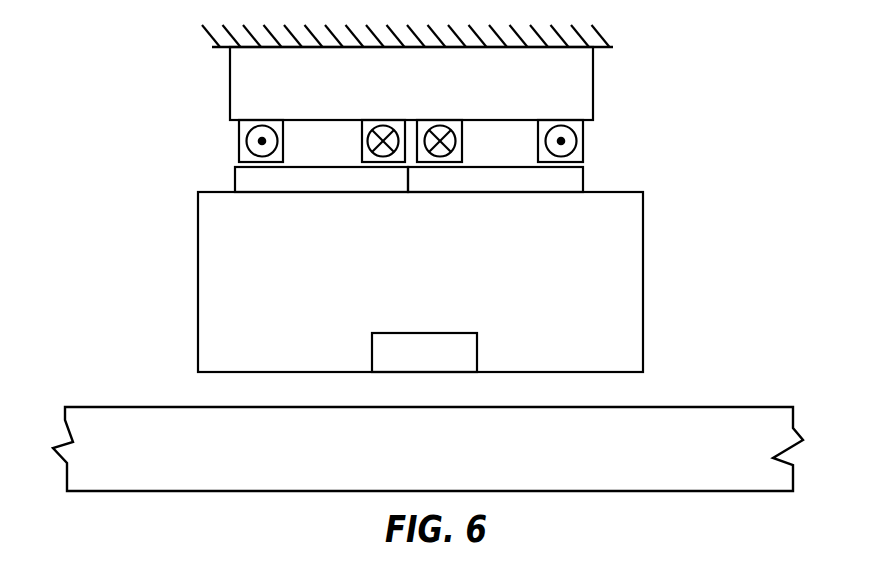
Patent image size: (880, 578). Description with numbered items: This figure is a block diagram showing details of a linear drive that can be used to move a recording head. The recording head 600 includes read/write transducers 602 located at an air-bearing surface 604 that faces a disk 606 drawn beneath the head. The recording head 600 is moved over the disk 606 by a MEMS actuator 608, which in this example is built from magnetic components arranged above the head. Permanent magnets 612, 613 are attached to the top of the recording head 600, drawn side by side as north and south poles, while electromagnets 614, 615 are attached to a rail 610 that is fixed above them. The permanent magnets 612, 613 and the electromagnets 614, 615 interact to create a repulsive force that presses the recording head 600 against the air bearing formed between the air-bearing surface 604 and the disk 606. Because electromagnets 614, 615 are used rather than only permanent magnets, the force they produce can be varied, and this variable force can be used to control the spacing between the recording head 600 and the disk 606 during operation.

The recording head 600 is at (198, 265).
The read/write transducers 602 is at (383, 352).
The air-bearing surface 604 is at (617, 372).
The disk 606 is at (661, 483).
The MEMS actuator 608 is at (681, 151).
The rail 610 is at (230, 75).
The permanent magnet 612 is at (235, 180).
The permanent magnet 613 is at (563, 178).
The electromagnet 614 is at (370, 124).
The electromagnet 615 is at (457, 122).